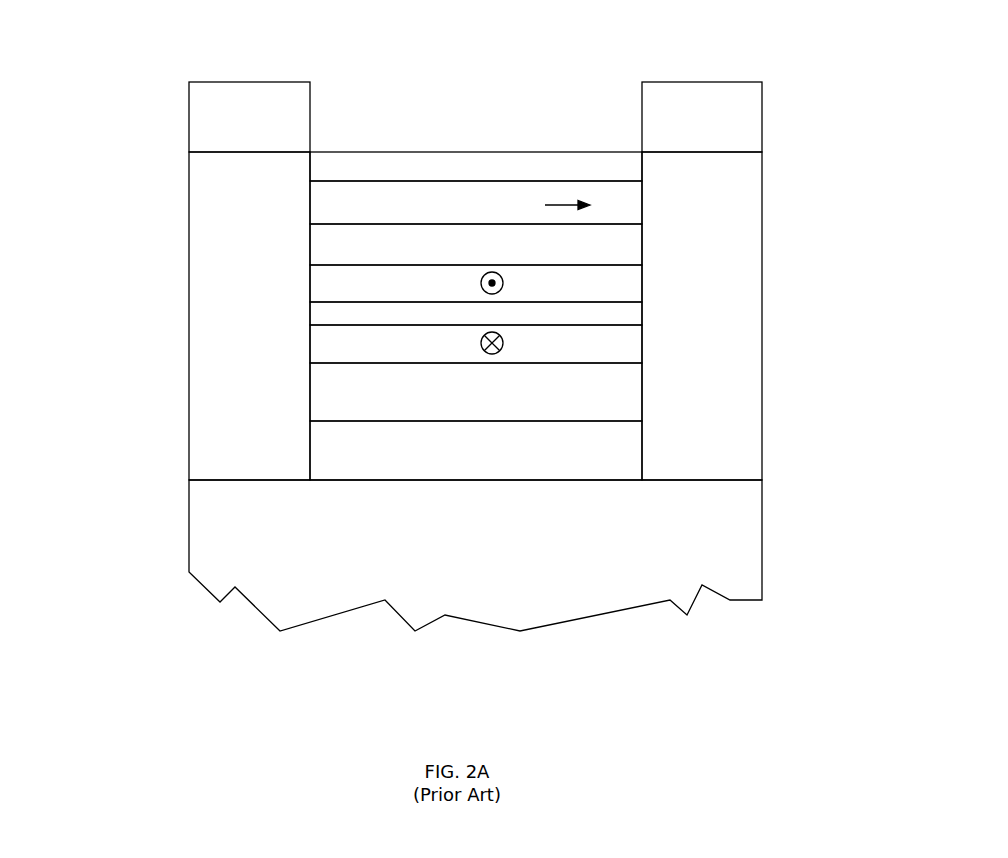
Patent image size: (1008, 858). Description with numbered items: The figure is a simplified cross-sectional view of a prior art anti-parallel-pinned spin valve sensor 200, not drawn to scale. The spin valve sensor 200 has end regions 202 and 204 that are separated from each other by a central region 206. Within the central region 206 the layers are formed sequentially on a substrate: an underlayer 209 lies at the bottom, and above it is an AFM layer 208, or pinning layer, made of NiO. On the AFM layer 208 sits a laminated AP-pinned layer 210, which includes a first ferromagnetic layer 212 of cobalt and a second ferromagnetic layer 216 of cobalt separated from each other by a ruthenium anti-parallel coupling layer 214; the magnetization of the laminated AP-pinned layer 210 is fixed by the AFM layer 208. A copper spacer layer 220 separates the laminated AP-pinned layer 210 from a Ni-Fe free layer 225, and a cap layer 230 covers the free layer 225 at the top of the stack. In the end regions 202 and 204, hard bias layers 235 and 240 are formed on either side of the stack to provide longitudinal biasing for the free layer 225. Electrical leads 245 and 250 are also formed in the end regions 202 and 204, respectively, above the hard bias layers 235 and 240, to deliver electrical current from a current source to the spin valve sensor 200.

The AP-pinned spin valve sensor 200 is at (295, 705).
The end region 202 is at (185, 70).
The end region 204 is at (637, 70).
The central region 206 is at (637, 70).
The AFM layer 208 is at (625, 390).
The underlayer 209 is at (625, 442).
The laminated AP-pinned layer 210 is at (302, 264).
The first ferromagnetic layer 212 is at (630, 333).
The ruthenium anti-parallel coupling layer 214 is at (633, 313).
The second ferromagnetic layer 216 is at (627, 268).
The copper spacer layer 220 is at (620, 243).
The Ni-Fe free layer 225 is at (608, 202).
The cap layer 230 is at (618, 167).
The hard bias layer 235 is at (250, 465).
The hard bias layer 240 is at (732, 465).
The electrical lead 245 is at (189, 127).
The electrical lead 250 is at (762, 123).